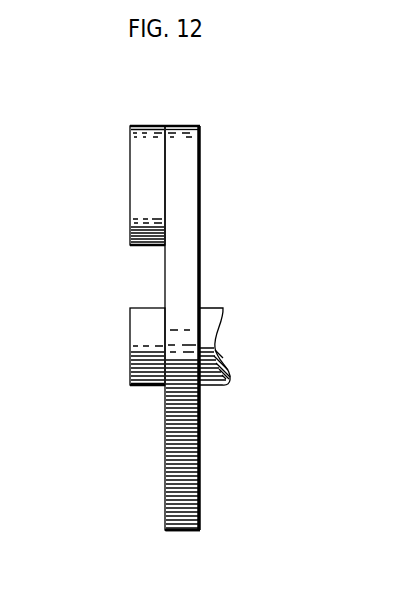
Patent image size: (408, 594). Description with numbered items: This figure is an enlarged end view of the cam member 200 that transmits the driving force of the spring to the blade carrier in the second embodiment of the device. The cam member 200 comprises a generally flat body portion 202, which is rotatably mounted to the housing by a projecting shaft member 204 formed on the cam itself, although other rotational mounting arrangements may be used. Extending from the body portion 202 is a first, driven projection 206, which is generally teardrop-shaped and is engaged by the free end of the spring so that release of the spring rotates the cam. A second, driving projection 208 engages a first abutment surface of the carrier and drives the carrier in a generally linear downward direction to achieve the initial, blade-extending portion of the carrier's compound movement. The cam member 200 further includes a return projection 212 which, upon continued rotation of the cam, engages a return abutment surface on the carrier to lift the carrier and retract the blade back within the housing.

The cam member 200 is at (214, 255).
The body portion 202 is at (185, 197).
The shaft member 204 is at (216, 346).
The driven projection 206 is at (143, 178).
The driving projection 208 is at (128, 350).
The return projection 212 is at (183, 531).